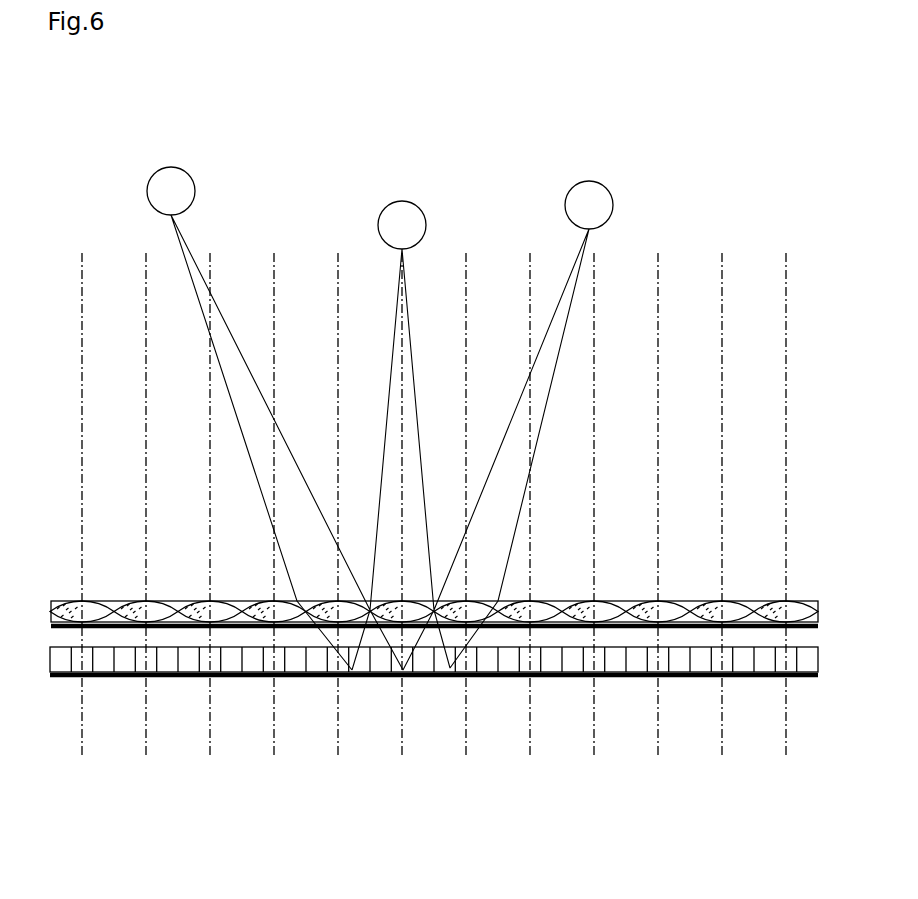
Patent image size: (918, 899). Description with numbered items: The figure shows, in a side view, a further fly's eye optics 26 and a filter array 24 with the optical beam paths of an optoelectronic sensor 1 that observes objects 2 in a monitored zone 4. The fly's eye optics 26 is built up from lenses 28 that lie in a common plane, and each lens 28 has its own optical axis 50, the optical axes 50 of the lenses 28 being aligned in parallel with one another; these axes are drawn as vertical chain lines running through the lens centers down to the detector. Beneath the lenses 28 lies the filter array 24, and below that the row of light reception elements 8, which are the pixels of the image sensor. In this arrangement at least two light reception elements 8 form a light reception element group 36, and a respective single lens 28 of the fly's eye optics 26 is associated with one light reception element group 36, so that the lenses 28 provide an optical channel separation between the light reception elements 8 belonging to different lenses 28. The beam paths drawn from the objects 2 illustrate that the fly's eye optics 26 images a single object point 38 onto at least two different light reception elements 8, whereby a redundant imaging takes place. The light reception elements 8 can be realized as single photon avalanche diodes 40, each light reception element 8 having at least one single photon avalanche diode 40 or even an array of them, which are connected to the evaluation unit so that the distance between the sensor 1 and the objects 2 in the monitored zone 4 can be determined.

The optoelectronic sensor 1 is at (708, 182).
The object 2 is at (177, 184).
The monitored zone 4 is at (682, 352).
The light reception element 8 is at (437, 668).
The filter array 24 is at (640, 632).
The fly's eye optics 26 is at (112, 600).
The lens 28 is at (545, 607).
The light reception element group 36 is at (70, 690).
The object point 38 is at (162, 225).
The single photon avalanche diode 40 is at (638, 680).
The optical axis 50 is at (208, 715).